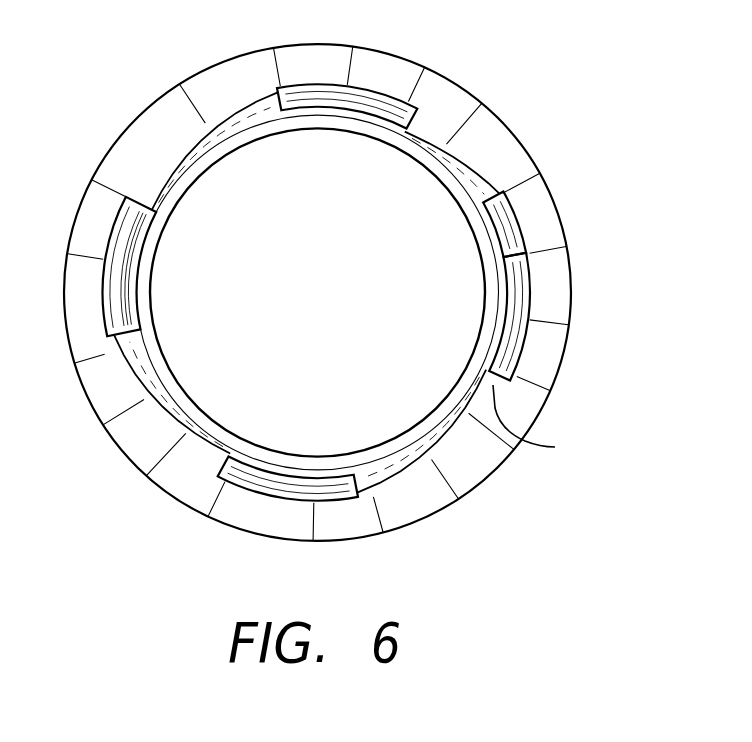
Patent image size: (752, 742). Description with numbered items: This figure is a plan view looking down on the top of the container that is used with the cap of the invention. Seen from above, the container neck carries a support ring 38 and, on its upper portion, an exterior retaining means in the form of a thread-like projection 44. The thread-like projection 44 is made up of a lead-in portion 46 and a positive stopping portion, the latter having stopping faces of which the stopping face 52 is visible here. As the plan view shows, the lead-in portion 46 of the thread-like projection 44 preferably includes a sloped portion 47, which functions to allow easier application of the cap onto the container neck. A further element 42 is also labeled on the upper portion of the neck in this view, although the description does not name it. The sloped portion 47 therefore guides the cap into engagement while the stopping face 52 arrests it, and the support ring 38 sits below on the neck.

The support ring 38 is at (571, 262).
The arcuate shoe segment 42 is at (422, 145).
The thread-like projection 44 is at (531, 331).
The lead-in portion 46 is at (521, 216).
The sloped portion 47 is at (487, 177).
The stopping face 52 is at (555, 447).